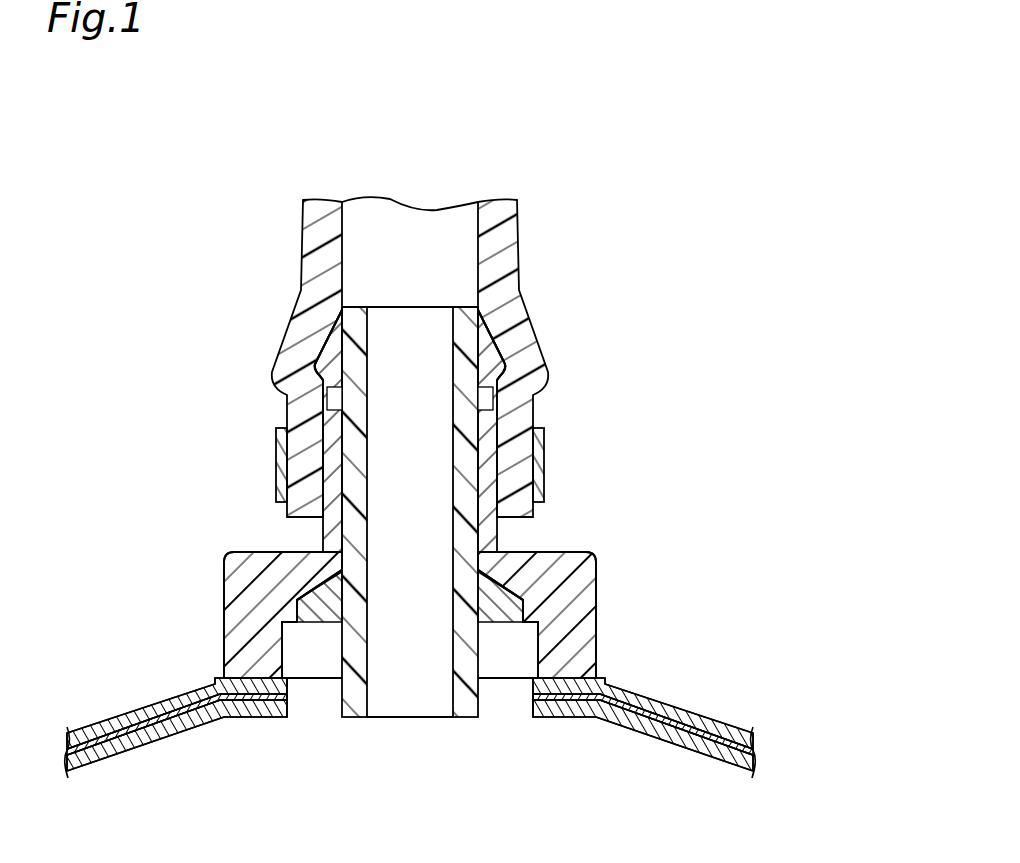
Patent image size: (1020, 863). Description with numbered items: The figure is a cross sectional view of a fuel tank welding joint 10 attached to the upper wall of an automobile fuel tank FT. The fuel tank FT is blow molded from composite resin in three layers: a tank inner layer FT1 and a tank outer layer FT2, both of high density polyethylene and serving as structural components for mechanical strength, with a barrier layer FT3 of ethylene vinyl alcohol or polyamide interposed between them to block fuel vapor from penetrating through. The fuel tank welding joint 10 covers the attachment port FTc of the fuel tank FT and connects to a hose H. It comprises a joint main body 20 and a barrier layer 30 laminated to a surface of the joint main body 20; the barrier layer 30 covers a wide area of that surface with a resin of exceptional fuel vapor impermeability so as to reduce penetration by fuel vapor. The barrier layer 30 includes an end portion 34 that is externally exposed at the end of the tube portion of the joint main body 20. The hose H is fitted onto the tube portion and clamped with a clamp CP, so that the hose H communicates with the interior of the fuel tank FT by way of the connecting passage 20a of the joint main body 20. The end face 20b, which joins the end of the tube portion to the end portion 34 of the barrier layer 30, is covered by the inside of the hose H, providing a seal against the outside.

The hose H is at (517, 262).
The end portion 34 is at (473, 350).
The connecting passage 20a is at (505, 357).
The end face 20b is at (493, 400).
The clamp CP is at (275, 470).
The joint main body 20 is at (595, 560).
The barrier layer 30 is at (513, 612).
The fuel tank welding joint 10 is at (687, 545).
The tank outer layer FT2 is at (757, 737).
The barrier layer FT3 is at (757, 752).
The tank inner layer FT1 is at (758, 763).
The fuel tank FT is at (857, 695).
The attachment port FTc is at (530, 700).